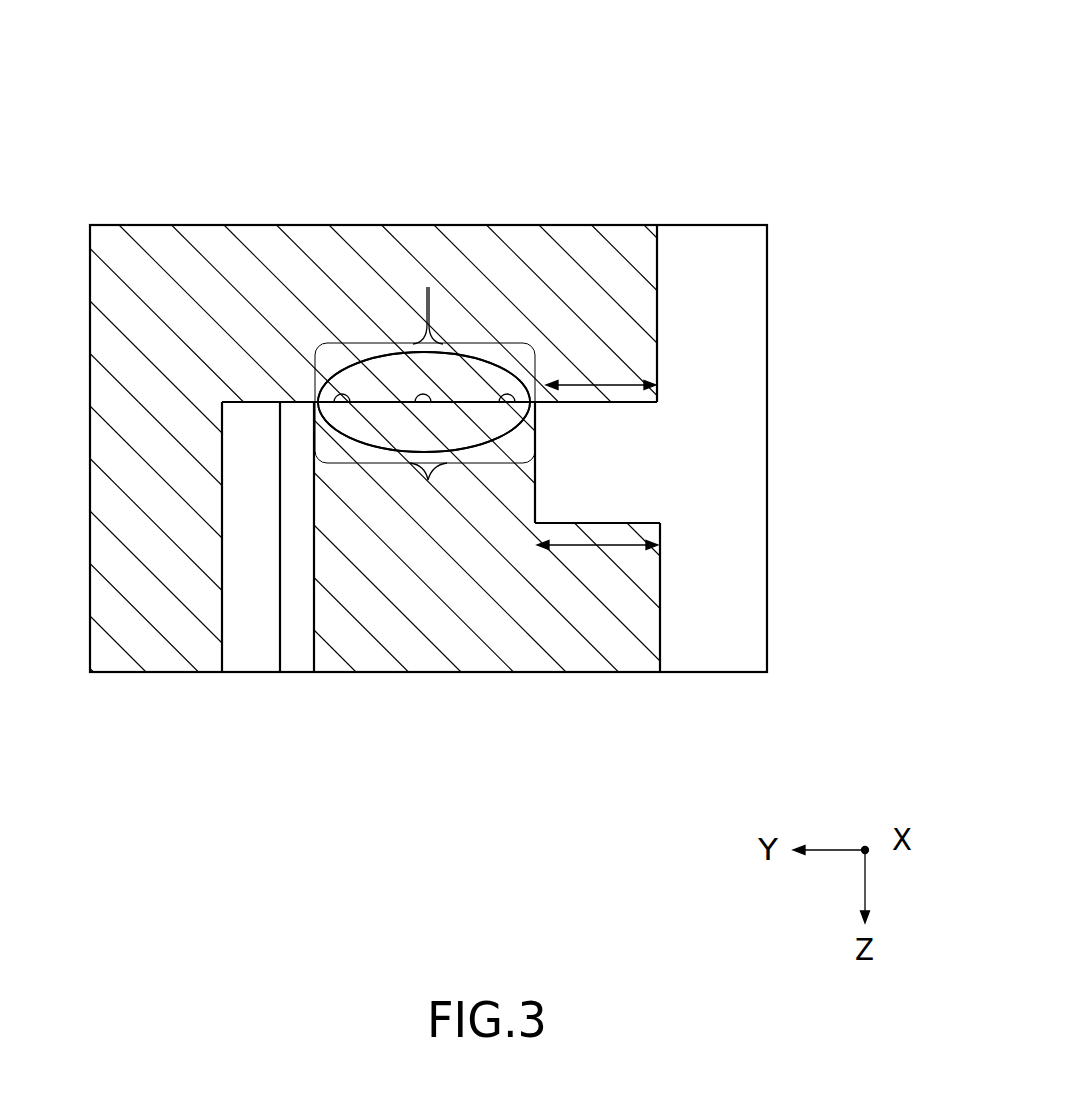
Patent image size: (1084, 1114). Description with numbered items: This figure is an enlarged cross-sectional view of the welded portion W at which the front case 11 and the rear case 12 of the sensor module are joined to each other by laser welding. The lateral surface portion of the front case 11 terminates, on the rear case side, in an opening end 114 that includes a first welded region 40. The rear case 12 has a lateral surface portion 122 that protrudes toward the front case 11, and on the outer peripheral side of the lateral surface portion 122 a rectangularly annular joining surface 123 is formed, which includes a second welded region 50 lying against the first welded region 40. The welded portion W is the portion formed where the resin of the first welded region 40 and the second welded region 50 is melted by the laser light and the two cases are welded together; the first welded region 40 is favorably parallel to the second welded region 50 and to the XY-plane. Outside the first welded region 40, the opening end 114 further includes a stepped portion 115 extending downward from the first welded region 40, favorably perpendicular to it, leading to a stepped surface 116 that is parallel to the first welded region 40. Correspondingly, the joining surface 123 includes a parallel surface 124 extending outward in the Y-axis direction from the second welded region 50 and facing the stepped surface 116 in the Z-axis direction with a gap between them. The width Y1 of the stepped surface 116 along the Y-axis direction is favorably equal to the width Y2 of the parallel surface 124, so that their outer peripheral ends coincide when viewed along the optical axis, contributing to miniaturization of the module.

The front case 11 is at (349, 697).
The rear case 12 is at (249, 208).
The first welded region 40 is at (428, 482).
The second welded region 50 is at (413, 265).
The opening end 114 is at (713, 778).
The stepped portion 115 is at (540, 495).
The stepped surface 116 is at (638, 522).
The lateral surface portion 122 is at (165, 635).
The joining surface 123 is at (733, 92).
The parallel surface 124 is at (638, 430).
The welded portion W is at (350, 355).
The width of the stepped surface Y1 is at (597, 570).
The width of the parallel surface Y2 is at (601, 361).